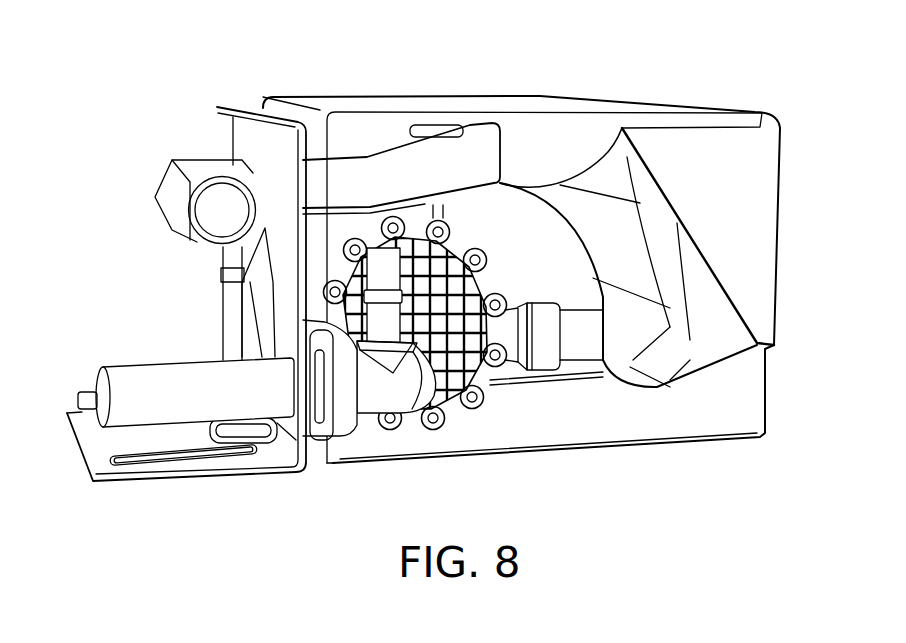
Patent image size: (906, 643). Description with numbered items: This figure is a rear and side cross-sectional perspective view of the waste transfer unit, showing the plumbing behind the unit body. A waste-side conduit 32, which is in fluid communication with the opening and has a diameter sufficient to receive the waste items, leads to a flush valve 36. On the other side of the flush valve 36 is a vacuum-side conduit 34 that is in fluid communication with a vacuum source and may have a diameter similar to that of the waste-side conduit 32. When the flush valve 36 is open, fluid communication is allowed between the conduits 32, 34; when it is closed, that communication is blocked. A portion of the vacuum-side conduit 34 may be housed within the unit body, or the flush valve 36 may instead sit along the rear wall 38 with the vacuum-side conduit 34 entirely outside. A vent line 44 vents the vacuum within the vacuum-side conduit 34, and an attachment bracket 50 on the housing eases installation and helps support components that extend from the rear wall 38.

The waste-side conduit 32 is at (588, 348).
The vacuum-side conduit 34 is at (183, 387).
The flush valve 36 is at (452, 255).
The rear wall 38 is at (310, 140).
The vent line 44 is at (400, 168).
The attachment bracket 50 is at (127, 472).